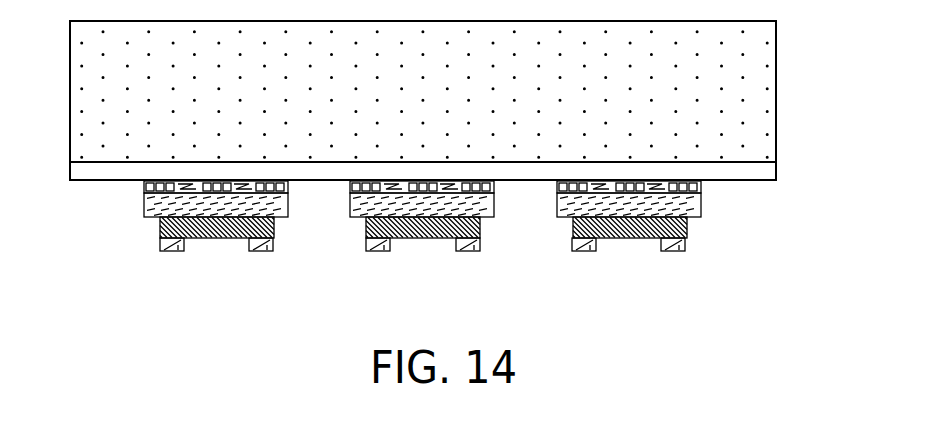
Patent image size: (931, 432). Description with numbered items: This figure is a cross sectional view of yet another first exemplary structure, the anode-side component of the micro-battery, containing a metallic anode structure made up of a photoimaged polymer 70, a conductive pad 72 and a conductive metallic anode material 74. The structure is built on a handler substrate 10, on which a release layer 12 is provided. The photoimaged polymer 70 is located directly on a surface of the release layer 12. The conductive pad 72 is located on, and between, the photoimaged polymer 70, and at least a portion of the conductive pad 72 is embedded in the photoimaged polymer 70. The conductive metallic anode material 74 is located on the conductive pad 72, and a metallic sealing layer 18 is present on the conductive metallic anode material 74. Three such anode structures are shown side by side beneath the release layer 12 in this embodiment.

The handler substrate 10 is at (764, 67).
The release layer 12 is at (767, 166).
The photoimaged polymer 70 is at (144, 185).
The conductive pad 72 is at (148, 204).
The conductive metallic anode material 74 is at (160, 228).
The metallic sealing layer 18 is at (173, 252).